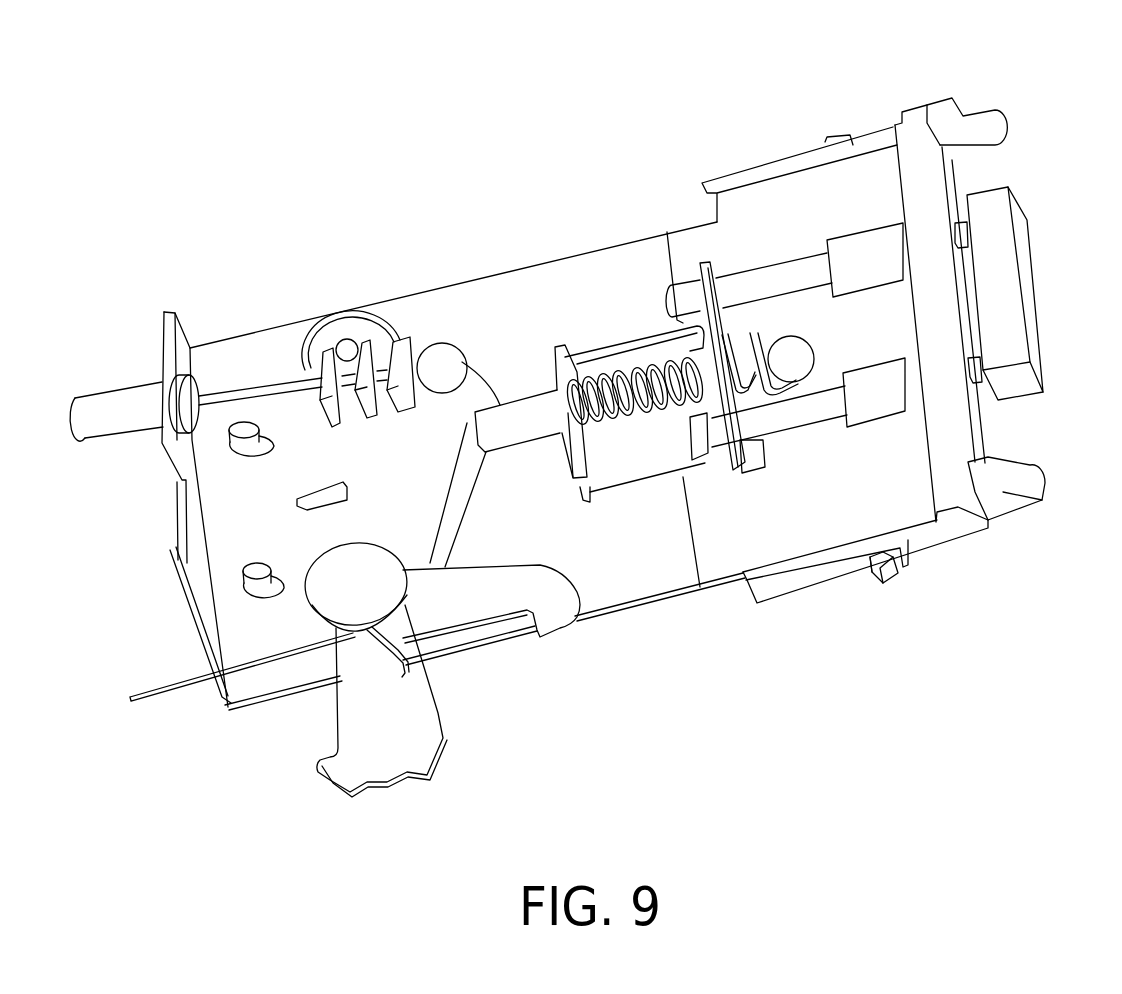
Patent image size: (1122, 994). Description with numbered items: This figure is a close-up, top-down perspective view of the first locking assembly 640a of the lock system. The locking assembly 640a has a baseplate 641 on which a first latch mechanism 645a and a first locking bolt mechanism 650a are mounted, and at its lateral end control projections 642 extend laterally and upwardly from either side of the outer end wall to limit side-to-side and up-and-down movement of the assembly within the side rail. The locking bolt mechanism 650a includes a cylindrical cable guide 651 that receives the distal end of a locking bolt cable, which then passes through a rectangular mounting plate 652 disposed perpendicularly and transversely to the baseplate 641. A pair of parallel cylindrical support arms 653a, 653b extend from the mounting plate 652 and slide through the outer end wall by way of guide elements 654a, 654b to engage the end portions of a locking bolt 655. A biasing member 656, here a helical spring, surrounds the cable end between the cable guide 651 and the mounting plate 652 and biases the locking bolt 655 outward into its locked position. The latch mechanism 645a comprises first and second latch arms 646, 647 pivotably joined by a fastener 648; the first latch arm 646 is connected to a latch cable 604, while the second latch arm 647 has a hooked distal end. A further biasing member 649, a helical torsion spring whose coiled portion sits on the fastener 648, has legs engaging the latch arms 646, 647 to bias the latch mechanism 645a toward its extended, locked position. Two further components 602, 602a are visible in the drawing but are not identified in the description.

The first locking assembly 640a is at (175, 186).
The latch cable 604 is at (243, 398).
The first latch arm 646 is at (400, 343).
The ball 602 is at (463, 413).
The cylindrical cable guide 651 is at (518, 407).
The rectangular mounting plate 652 is at (592, 504).
The biasing member 656 is at (630, 400).
The first locking bolt mechanism 650a is at (650, 212).
The first support arm 653a is at (751, 333).
The second support arm 653b is at (785, 420).
The ball 602a is at (797, 336).
The first guide element 654a is at (847, 250).
The second guide element 654b is at (853, 420).
The control projections 642 is at (978, 123).
The locking bolt 655 is at (998, 292).
The baseplate 641 is at (905, 550).
The second latch arm 647 is at (470, 592).
The fastener 648 is at (340, 603).
The further biasing member 649 is at (338, 638).
The first latch mechanism 645a is at (322, 820).